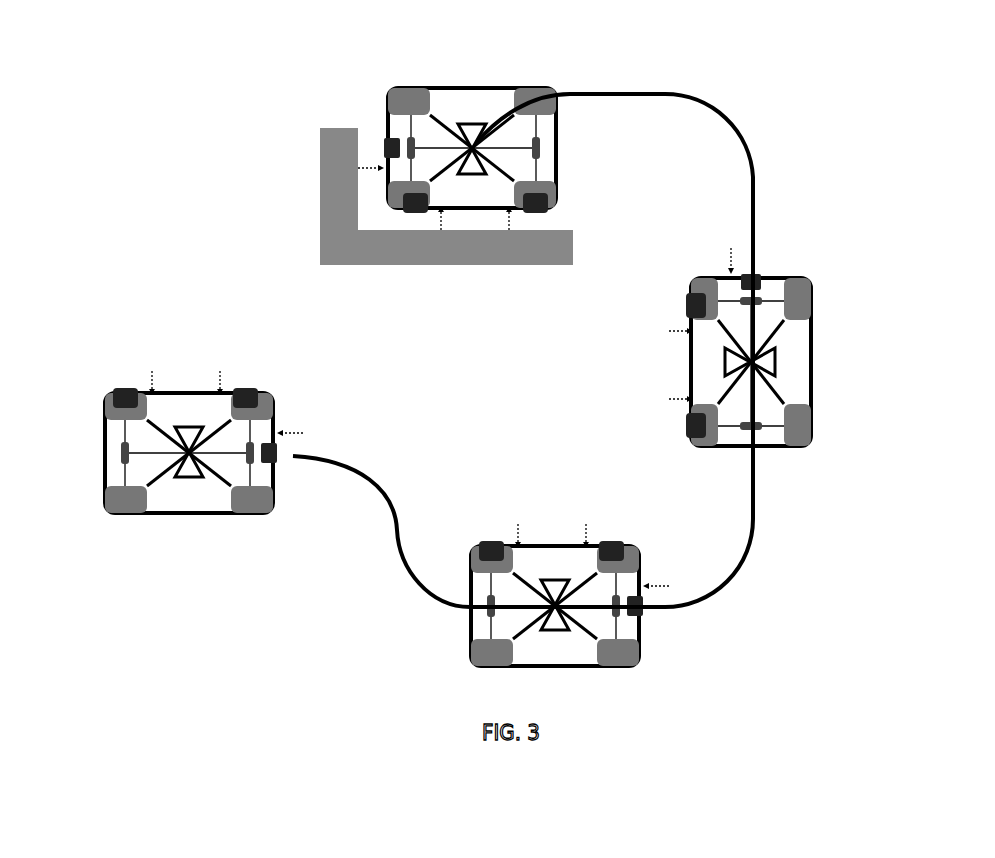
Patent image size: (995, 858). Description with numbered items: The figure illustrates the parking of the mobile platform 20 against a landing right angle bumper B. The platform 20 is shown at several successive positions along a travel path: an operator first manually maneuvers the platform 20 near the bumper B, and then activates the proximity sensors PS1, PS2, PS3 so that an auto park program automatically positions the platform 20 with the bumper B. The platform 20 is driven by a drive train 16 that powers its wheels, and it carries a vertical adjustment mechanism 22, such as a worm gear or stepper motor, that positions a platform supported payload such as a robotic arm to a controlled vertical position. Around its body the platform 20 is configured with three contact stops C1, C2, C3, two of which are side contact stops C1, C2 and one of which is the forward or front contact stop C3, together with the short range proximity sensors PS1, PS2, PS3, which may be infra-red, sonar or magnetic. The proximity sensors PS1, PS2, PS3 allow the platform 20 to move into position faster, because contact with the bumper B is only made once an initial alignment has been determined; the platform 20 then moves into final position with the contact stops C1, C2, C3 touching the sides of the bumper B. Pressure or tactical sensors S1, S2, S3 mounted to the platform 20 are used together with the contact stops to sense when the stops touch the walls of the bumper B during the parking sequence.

The platform 20 is at (145, 429).
The drive train 16 is at (170, 487).
The vertical adjustment mechanism 22 is at (222, 495).
The pressure sensor S1 is at (89, 370).
The pressure sensor S2 is at (299, 376).
The pressure sensor S3 is at (289, 493).
The contact stop C1 is at (99, 355).
The contact stop C2 is at (276, 369).
The contact stop C3 is at (307, 492).
The proximity sensor PS1 is at (190, 342).
The proximity sensor PS2 is at (254, 352).
The proximity sensor PS3 is at (318, 406).
The bumper B is at (358, 231).